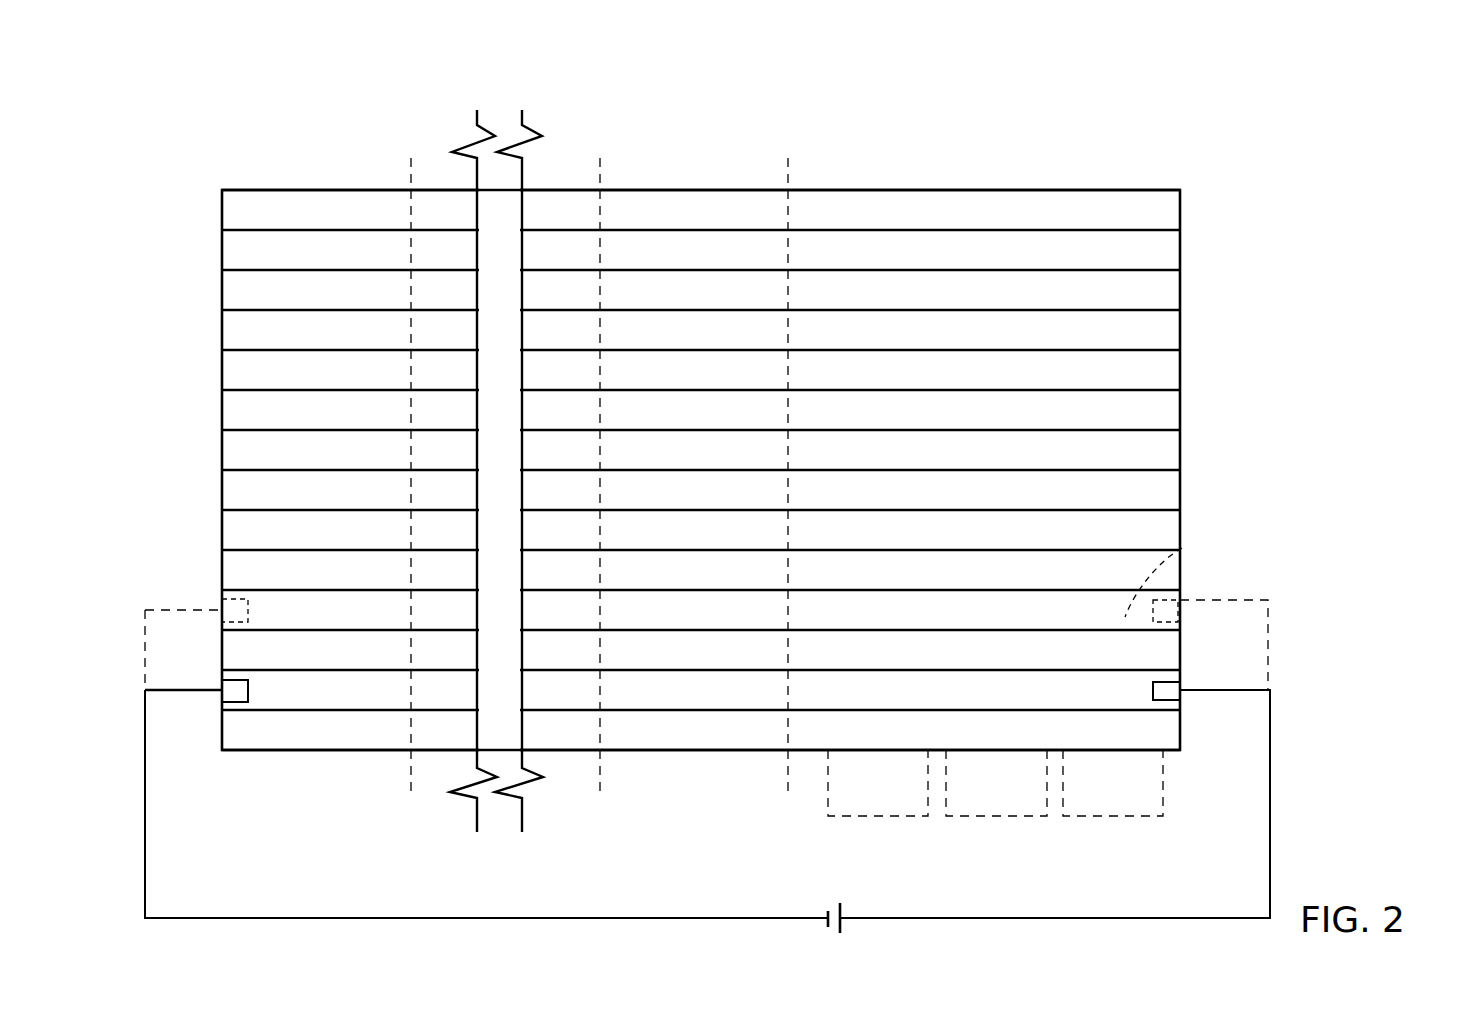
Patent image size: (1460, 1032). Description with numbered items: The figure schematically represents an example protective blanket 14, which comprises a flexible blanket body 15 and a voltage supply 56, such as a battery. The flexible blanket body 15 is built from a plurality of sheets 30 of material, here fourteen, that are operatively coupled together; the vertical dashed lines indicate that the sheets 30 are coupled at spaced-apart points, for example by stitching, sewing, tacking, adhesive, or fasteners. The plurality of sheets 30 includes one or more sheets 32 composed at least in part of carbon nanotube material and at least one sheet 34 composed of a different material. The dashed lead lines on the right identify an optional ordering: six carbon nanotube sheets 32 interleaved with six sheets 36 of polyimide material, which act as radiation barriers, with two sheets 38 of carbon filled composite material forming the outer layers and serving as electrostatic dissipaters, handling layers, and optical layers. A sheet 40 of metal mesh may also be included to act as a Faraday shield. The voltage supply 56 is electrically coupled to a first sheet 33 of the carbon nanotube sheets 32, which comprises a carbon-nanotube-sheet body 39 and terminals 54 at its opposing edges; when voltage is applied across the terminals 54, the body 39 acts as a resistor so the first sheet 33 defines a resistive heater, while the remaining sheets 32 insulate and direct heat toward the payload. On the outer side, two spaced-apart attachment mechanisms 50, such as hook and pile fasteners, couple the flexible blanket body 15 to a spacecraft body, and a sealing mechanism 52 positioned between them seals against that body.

The protective blanket 14 is at (1067, 73).
The flexible blanket body 15 is at (1022, 90).
The sheets 30 is at (952, 90).
The carbon nanotube sheet 32 is at (1185, 287).
The first sheet 33 is at (1185, 617).
The sheet of different material 34 is at (772, 112).
The polyimide sheet 36 is at (700, 150).
The carbon filled composite sheet 38 is at (629, 150).
The carbon-nanotube-sheet body 39 is at (1182, 542).
The metal mesh sheet 40 is at (560, 150).
The attachment mechanism 50 is at (898, 818).
The sealing mechanism 52 is at (1013, 818).
The terminals 54 is at (235, 598).
The voltage supply 56 is at (843, 912).